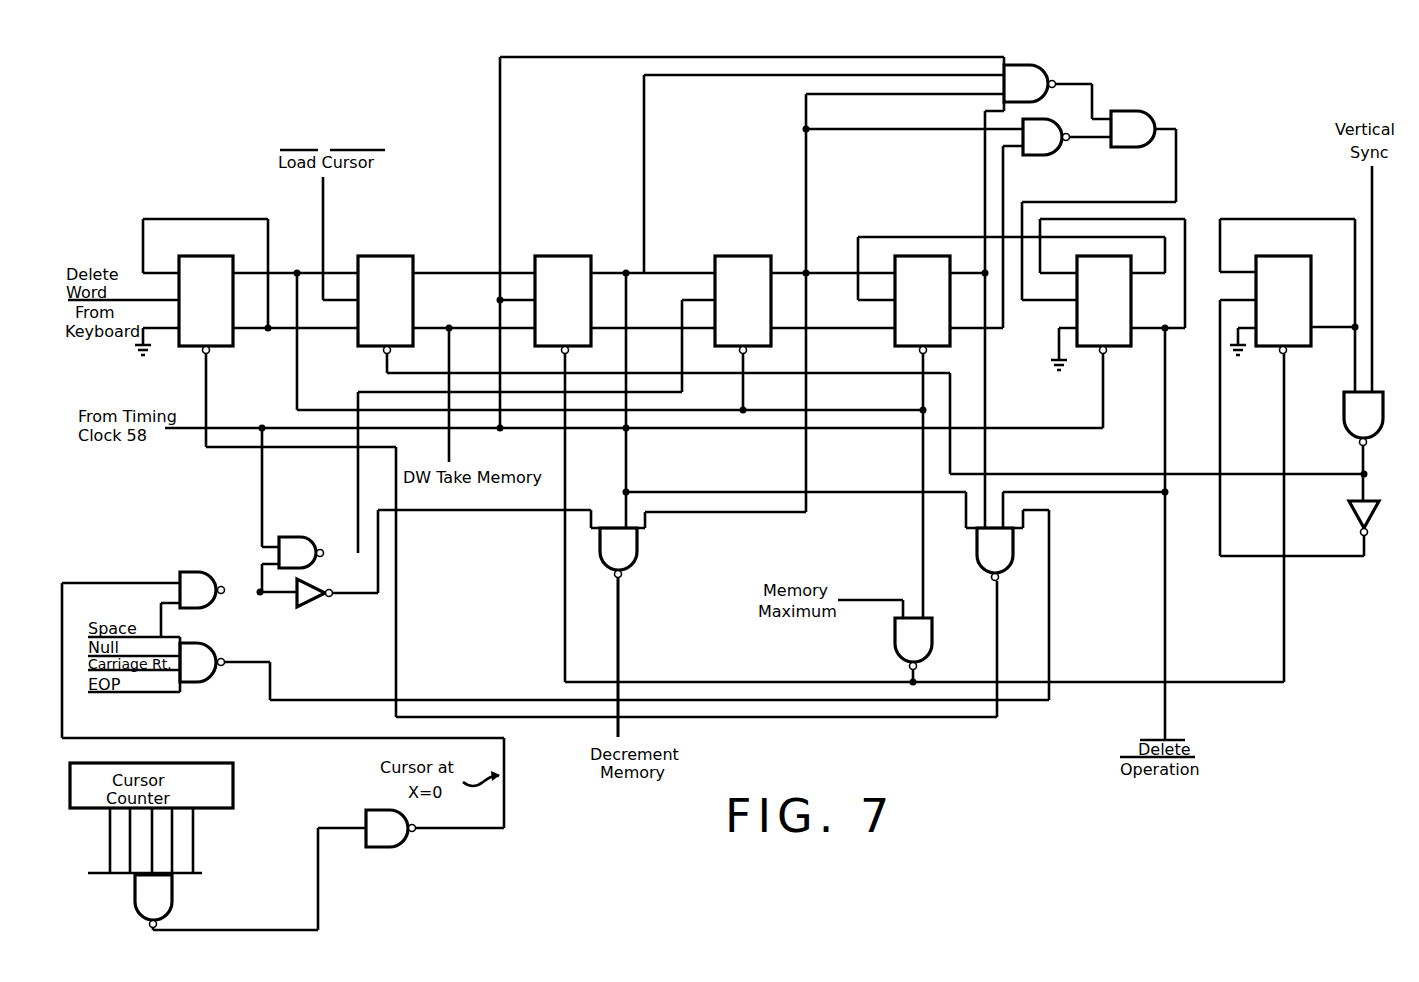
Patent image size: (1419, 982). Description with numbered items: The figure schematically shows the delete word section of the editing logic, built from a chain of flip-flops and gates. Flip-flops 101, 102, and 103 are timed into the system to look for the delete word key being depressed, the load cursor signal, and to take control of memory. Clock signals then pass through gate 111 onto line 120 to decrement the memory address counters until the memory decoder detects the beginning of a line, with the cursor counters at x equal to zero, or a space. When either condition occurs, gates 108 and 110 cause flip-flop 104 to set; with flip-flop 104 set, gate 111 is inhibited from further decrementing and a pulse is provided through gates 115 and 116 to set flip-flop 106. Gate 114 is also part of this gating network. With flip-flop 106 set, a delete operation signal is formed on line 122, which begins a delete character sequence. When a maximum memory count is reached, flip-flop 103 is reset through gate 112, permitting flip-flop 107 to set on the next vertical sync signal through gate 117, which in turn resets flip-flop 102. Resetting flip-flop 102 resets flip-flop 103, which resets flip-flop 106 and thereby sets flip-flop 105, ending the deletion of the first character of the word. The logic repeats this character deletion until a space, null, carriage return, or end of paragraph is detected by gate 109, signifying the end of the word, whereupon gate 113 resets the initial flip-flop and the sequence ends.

The flip-flop 101 is at (216, 262).
The flip-flop 102 is at (386, 262).
The flip-flop 103 is at (563, 262).
The flip-flop 104 is at (742, 262).
The flip-flop 105 is at (920, 262).
The flip-flop 106 is at (1100, 262).
The flip-flop 107 is at (1285, 262).
The gate 108 is at (190, 580).
The gate 109 is at (202, 652).
The gate 110 is at (293, 541).
The gate 111 is at (630, 545).
The gate 112 is at (895, 645).
The gate 113 is at (988, 562).
The gate 114 is at (1023, 72).
The gate 115 is at (1045, 139).
The gate 116 is at (1138, 122).
The gate 117 is at (1350, 410).
The line 120 is at (645, 662).
The line 122 is at (1167, 710).